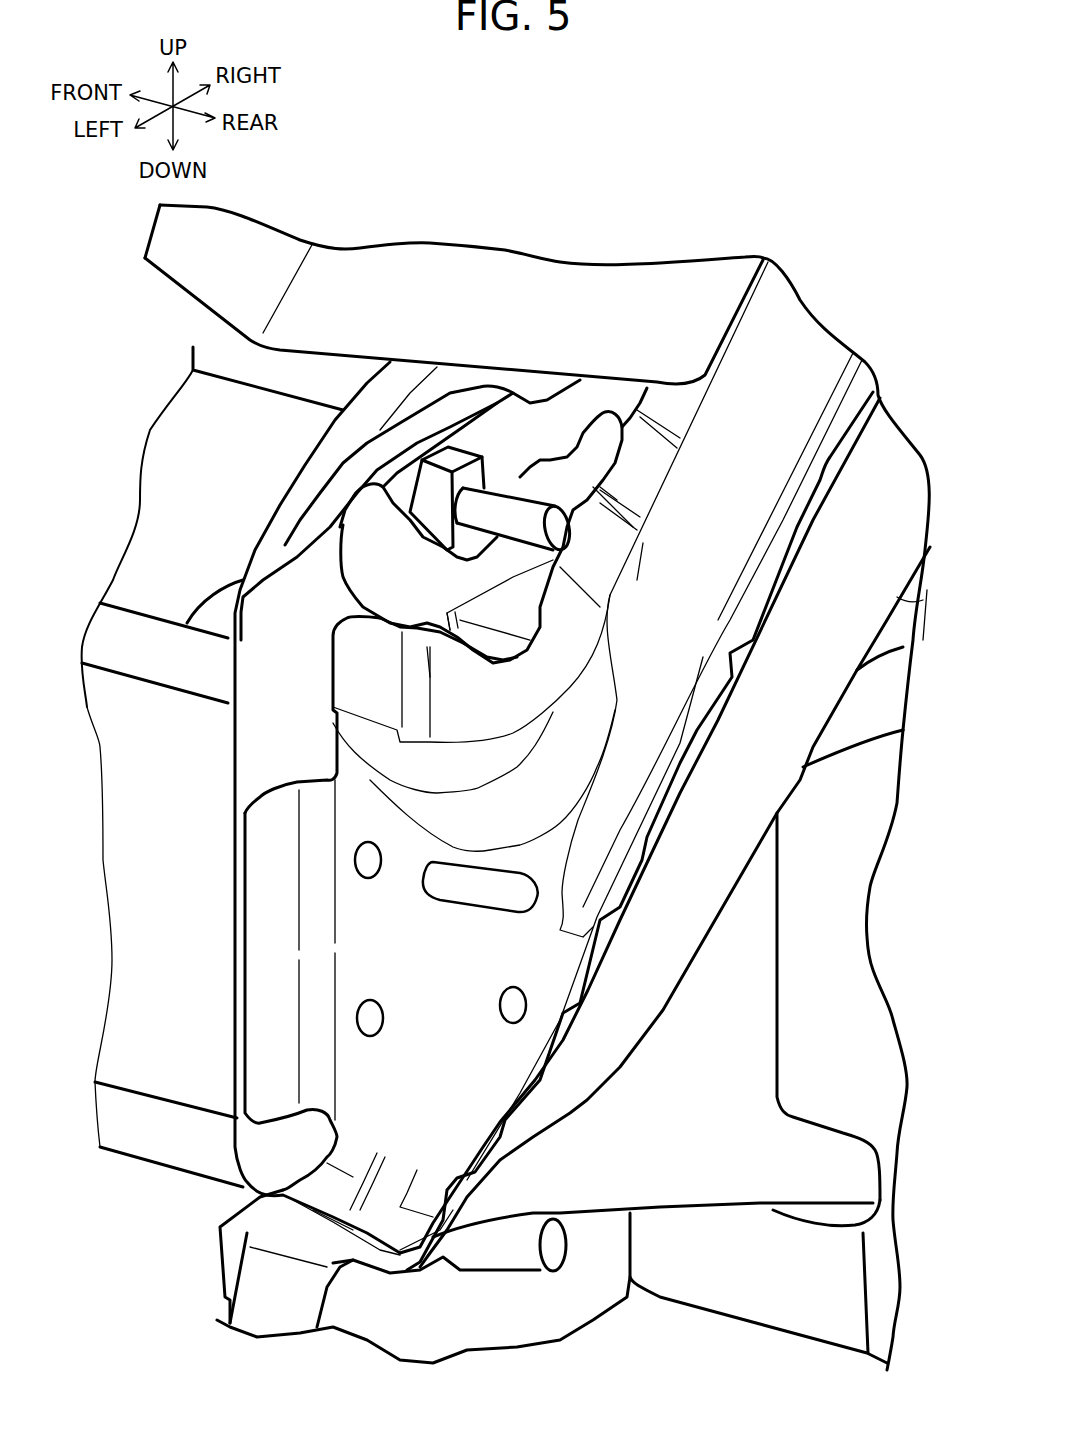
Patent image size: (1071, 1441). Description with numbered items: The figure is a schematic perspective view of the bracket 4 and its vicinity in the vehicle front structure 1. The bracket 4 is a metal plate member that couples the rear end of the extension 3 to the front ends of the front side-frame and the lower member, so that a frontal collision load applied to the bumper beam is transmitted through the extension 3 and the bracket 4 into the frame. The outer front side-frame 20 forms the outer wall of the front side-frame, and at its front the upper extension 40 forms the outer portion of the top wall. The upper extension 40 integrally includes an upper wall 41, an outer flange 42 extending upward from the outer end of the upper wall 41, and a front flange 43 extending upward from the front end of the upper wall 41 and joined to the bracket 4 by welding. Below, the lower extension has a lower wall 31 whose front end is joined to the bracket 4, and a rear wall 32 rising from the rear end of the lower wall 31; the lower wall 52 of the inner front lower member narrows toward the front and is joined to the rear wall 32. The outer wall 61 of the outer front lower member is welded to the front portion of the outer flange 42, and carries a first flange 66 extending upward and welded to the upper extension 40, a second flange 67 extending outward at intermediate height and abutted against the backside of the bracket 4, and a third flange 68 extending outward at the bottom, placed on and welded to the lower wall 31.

The vehicle front structure 1 is at (614, 204).
The extension 3 is at (150, 878).
The bracket 4 is at (283, 627).
The outer front side-frame 20 is at (827, 907).
The lower wall 31 is at (297, 1240).
The rear wall 32 is at (687, 1157).
The upper extension 40 is at (525, 197).
The upper wall 41 is at (513, 607).
The outer flange 42 is at (340, 607).
The front flange 43 is at (372, 510).
The lower wall 52 is at (895, 463).
The outer wall 61 is at (800, 324).
The first flange 66 is at (367, 678).
The second flange 67 is at (267, 940).
The third flange 68 is at (310, 1190).